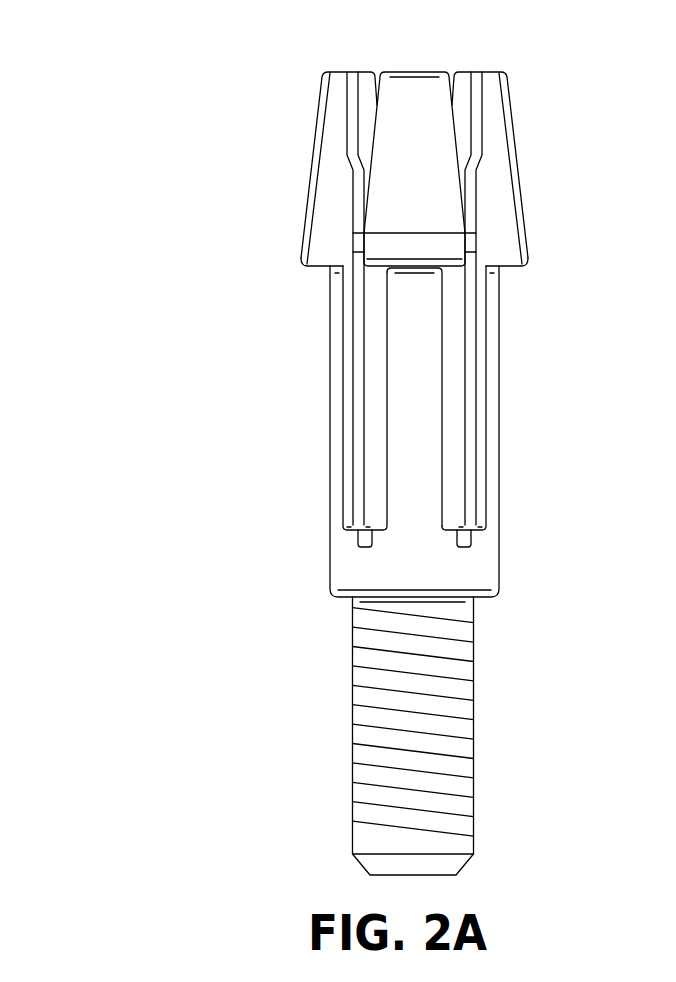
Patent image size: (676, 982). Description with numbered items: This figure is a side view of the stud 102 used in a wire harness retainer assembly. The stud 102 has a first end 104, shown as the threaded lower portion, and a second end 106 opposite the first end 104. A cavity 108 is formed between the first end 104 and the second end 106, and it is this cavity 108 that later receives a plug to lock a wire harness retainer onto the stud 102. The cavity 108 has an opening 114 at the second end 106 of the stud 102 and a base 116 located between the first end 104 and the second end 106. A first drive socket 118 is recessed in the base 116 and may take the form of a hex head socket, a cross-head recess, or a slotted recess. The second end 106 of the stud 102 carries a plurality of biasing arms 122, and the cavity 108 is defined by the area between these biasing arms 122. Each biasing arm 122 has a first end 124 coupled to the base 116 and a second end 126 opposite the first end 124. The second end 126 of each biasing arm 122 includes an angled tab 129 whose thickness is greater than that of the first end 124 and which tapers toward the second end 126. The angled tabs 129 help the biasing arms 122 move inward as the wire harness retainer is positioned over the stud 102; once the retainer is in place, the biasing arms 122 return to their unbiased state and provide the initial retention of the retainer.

The stud 102 is at (270, 378).
The first end 104 is at (335, 848).
The second end 106 is at (312, 65).
The cavity 108 is at (424, 439).
The opening 114 is at (389, 53).
The base 116 is at (480, 553).
The first drive socket 118 is at (363, 538).
The biasing arms 122 is at (437, 318).
The first end of biasing arm 124 is at (321, 522).
The second end of biasing arm 126 is at (296, 81).
The angled tab 129 is at (518, 177).